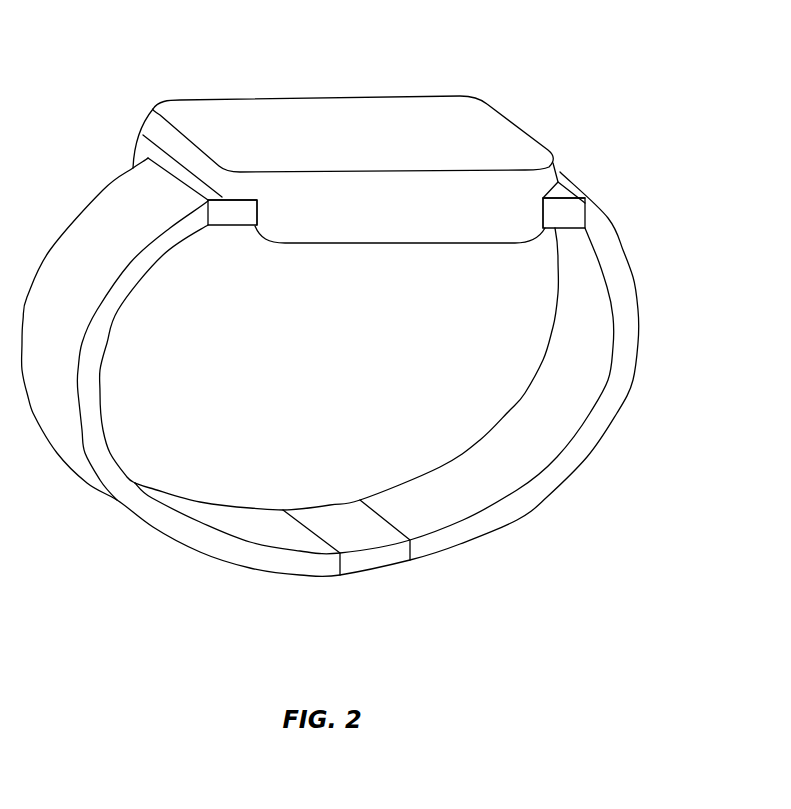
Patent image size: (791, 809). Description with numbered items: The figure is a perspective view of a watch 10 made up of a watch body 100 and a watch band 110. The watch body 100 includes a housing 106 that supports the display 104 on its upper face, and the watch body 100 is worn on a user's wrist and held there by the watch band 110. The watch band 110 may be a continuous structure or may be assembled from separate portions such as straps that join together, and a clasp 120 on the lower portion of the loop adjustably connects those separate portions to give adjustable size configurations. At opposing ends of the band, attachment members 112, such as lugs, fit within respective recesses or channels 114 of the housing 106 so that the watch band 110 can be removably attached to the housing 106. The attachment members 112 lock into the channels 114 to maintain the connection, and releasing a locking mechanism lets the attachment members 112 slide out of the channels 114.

The watch 10 is at (160, 78).
The watch body 100 is at (153, 109).
The display 104 is at (473, 117).
The housing 106 is at (557, 162).
The watch band 110 is at (623, 342).
The attachment members 112 is at (228, 215).
The channels 114 is at (261, 215).
The clasp 120 is at (374, 563).